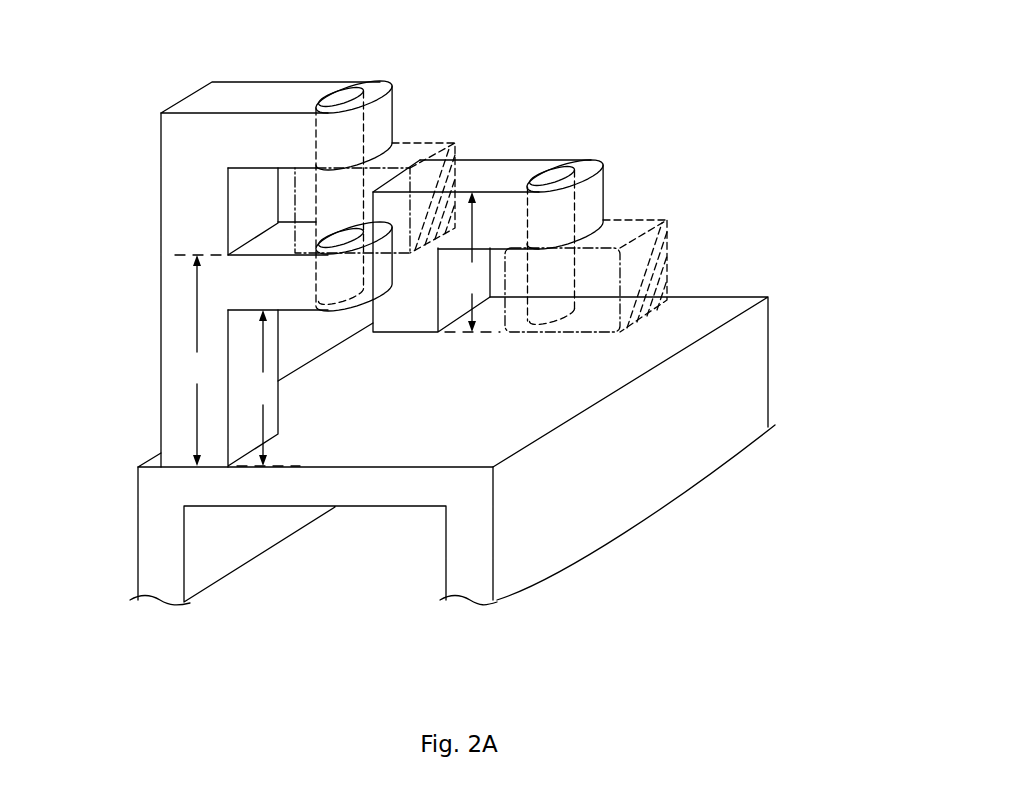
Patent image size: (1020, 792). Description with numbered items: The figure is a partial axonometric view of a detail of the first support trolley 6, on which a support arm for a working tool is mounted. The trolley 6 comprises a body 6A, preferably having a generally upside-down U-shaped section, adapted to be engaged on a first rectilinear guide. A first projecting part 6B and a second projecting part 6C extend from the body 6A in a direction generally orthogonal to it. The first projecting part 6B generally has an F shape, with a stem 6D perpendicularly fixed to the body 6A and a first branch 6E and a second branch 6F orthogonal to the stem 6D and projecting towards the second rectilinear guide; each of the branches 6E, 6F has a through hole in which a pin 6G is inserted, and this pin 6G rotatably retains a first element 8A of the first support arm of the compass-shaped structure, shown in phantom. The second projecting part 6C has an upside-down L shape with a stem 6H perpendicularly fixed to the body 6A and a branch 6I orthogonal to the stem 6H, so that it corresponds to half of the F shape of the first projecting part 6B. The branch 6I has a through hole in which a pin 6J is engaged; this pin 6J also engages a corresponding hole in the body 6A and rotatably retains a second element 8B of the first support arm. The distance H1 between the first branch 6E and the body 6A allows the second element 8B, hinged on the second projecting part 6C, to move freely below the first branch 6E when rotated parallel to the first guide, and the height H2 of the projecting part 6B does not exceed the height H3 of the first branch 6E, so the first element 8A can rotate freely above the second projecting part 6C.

The first support trolley 6 is at (295, 562).
The body 6A is at (543, 527).
The first projecting part 6B is at (86, 55).
The second projecting part 6C is at (568, 23).
The stem 6D is at (205, 223).
The first branch 6E is at (265, 273).
The second branch 6F is at (268, 138).
The pin 6G is at (342, 90).
The stem 6H is at (408, 152).
The branch 6I is at (483, 205).
The pin 6J is at (548, 177).
The first element 8A is at (420, 287).
The second element 8B is at (625, 230).
The distance H1 is at (268, 388).
The height H2 is at (472, 262).
The height H3 is at (201, 360).